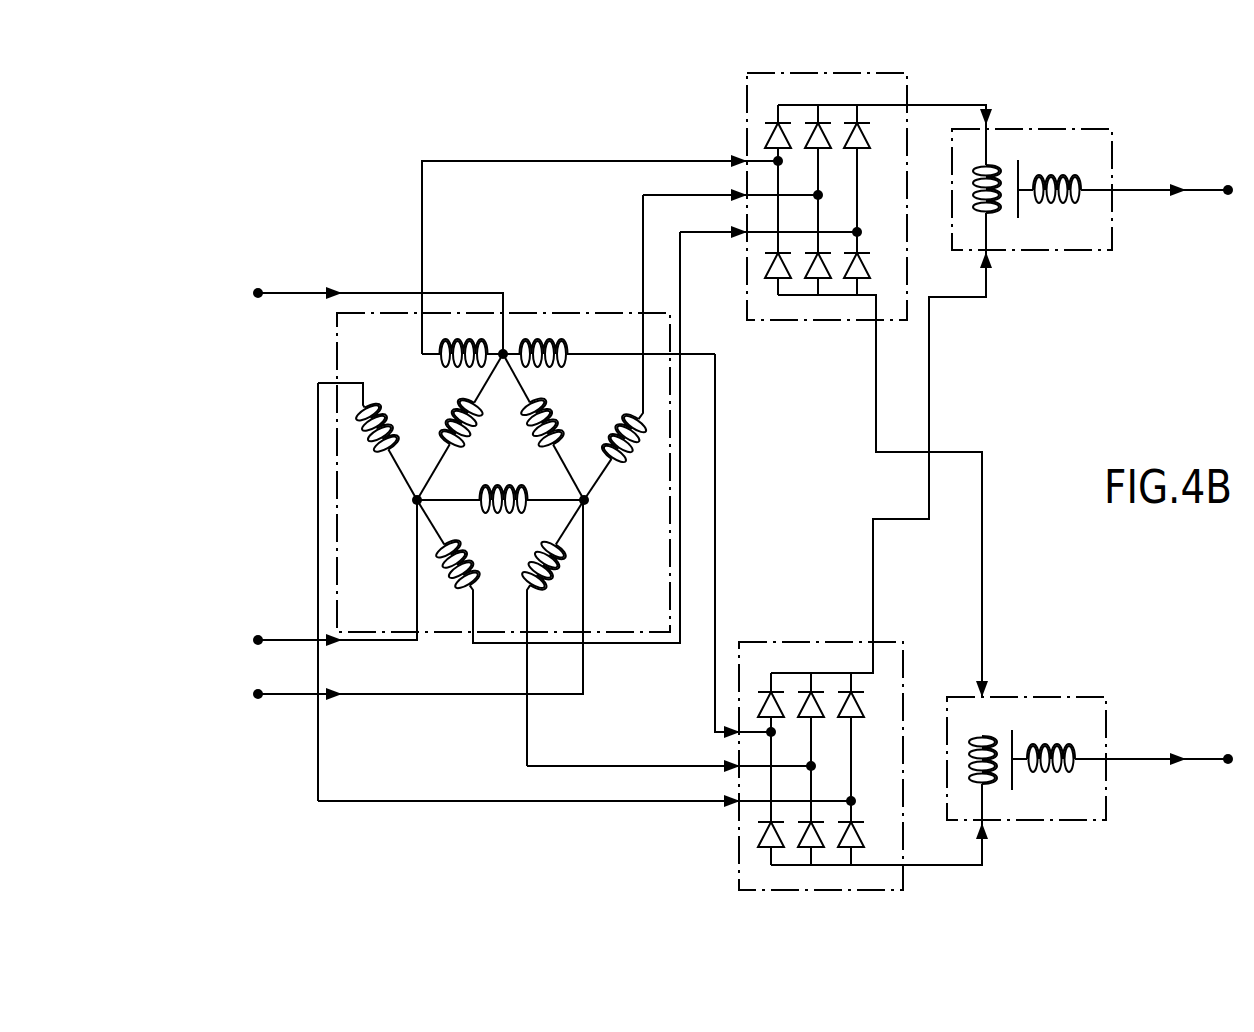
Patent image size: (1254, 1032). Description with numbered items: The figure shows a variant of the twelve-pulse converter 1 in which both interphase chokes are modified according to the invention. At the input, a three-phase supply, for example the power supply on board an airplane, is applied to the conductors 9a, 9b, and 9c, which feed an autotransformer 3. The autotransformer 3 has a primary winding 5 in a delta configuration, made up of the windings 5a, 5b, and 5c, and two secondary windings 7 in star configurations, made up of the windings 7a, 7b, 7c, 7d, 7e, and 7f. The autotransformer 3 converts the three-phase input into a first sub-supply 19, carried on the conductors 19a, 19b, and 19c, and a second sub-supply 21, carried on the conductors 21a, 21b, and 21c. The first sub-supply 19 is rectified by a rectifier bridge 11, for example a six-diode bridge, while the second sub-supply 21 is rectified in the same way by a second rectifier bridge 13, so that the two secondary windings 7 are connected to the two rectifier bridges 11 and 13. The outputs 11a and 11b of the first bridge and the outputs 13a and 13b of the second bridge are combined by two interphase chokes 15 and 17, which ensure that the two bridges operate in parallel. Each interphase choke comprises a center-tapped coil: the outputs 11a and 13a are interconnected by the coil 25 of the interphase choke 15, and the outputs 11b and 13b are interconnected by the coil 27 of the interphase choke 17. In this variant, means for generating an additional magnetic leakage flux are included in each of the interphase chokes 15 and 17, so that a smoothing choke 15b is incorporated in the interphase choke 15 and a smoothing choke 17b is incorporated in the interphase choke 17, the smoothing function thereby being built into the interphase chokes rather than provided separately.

The 12-pulse converter 1 is at (200, 406).
The autotransformer 3 is at (578, 312).
The primary winding 5 is at (430, 451).
The winding 5a is at (480, 423).
The winding 5b is at (557, 413).
The winding 5c is at (517, 507).
The secondary windings 7 is at (615, 470).
The winding 7a is at (473, 367).
The winding 7b is at (565, 333).
The winding 7c is at (640, 447).
The winding 7d is at (553, 573).
The winding 7e is at (445, 582).
The winding 7f is at (410, 417).
The conductor 9a is at (298, 293).
The conductor 9b is at (300, 640).
The conductor 9c is at (300, 694).
The rectifier bridge 11 is at (743, 80).
The output 11a is at (955, 106).
The output 11b is at (876, 377).
The rectifier bridge 13 is at (818, 635).
The output 13a is at (929, 377).
The output 13b is at (963, 866).
The interphase choke 15 is at (1035, 252).
The smoothing choke 15b is at (1062, 170).
The interphase choke 17 is at (1038, 822).
The smoothing choke 17b is at (1055, 740).
The first sub-supply 19 is at (632, 143).
The conductor 19a is at (688, 161).
The conductor 19b is at (643, 232).
The conductor 19c is at (682, 257).
The second sub-supply 21 is at (699, 818).
The conductor 21a is at (715, 617).
The conductor 21b is at (648, 764).
The conductor 21c is at (653, 803).
The center-tapped coil 25 is at (974, 192).
The center-tapped coil 27 is at (967, 760).